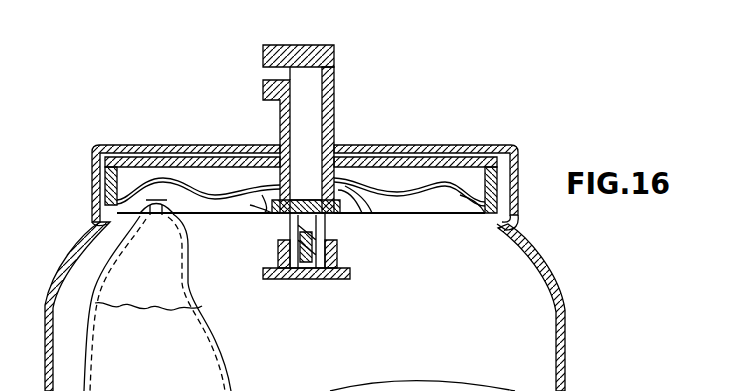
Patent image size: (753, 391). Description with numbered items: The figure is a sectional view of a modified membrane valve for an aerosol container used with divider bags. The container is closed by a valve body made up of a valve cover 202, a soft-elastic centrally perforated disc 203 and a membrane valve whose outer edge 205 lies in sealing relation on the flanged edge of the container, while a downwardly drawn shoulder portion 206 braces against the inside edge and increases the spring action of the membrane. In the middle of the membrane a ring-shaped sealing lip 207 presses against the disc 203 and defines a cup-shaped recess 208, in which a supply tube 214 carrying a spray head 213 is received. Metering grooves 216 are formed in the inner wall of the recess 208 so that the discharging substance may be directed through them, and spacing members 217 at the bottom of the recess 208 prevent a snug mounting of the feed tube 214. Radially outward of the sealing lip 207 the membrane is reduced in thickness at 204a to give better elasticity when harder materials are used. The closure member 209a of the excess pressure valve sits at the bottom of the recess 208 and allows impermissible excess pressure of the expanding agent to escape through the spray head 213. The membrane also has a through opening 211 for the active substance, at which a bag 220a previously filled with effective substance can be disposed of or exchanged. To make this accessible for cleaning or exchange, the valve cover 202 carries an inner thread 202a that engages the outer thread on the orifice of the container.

The valve cover 202 is at (414, 148).
The inner thread 202a is at (520, 217).
The soft-elastic centrally perforated disc 203 is at (448, 157).
The reduced thickness portion of membrane 204a is at (209, 184).
The edge of membrane valve 205 is at (522, 165).
The downwardly drawn shoulder portion 206 is at (489, 219).
The ring-shaped sealing lip 207 is at (372, 208).
The cup-shaped recess 208 is at (279, 243).
The closure member 209a is at (338, 263).
The through opening 211 is at (150, 227).
The spray head 213 is at (322, 46).
The supply tube 214 is at (334, 101).
The metering grooves 216 is at (270, 215).
The spacing members 217 is at (324, 226).
The bag 220a is at (232, 360).